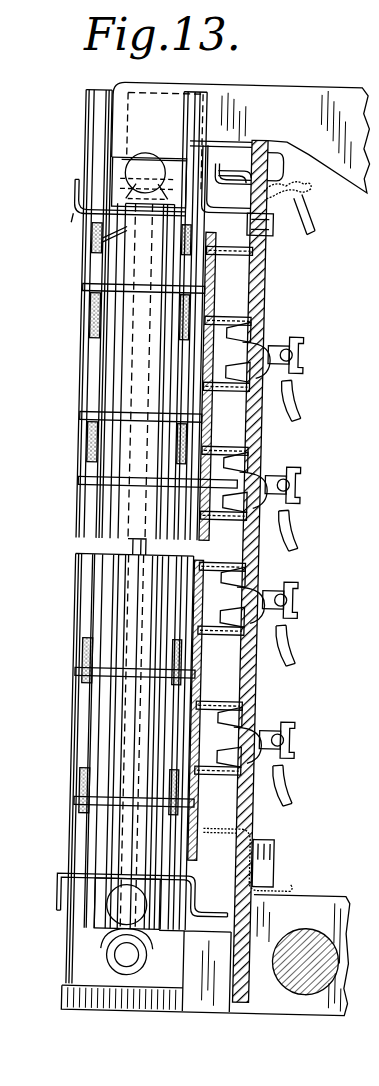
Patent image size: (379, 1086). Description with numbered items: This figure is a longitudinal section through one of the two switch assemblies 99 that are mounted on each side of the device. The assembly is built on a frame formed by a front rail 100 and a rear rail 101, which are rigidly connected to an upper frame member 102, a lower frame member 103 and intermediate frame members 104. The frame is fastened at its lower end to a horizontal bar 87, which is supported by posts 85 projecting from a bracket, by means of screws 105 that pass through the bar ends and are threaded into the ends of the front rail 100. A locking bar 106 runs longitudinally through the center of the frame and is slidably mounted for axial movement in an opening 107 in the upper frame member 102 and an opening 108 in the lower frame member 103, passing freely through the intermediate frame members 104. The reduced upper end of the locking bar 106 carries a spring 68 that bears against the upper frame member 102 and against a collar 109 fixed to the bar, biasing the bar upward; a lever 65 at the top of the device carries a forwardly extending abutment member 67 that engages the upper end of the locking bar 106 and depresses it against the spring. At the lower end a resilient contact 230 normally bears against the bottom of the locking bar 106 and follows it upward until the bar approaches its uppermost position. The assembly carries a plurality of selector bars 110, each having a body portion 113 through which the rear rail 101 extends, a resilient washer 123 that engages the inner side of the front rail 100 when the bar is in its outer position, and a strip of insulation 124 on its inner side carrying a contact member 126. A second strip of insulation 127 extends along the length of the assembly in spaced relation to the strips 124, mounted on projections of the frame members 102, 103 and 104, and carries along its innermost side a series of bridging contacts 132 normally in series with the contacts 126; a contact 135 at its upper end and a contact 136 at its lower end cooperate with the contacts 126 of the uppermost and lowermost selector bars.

The lever 65 is at (233, 93).
The strip of insulation 127 is at (253, 140).
The collar 109 is at (179, 177).
The abutment member 67 is at (104, 167).
The spring 68 is at (64, 197).
The clamp strap 135 is at (290, 200).
The upper frame member 102 is at (65, 211).
The opening 107 is at (123, 220).
The contact member 126 is at (212, 254).
The strip of insulation 124 is at (264, 283).
The body portion 113 is at (199, 290).
The selector bar 110 is at (70, 297).
The resilient washer 123 is at (92, 307).
The locking bar 106 is at (130, 335).
The rear rail 101 is at (124, 366).
The bridging contact 132 is at (300, 350).
The front rail 100 is at (78, 458).
The intermediate frame member 104 is at (78, 489).
The switch assembly 99 is at (67, 601).
The contact 136 is at (300, 884).
The lower frame member 103 is at (68, 893).
The opening 108 is at (133, 880).
The screw 105 is at (132, 962).
The resilient contact 230 is at (194, 971).
The horizontal bar 87 is at (202, 1002).
The post 85 is at (315, 980).